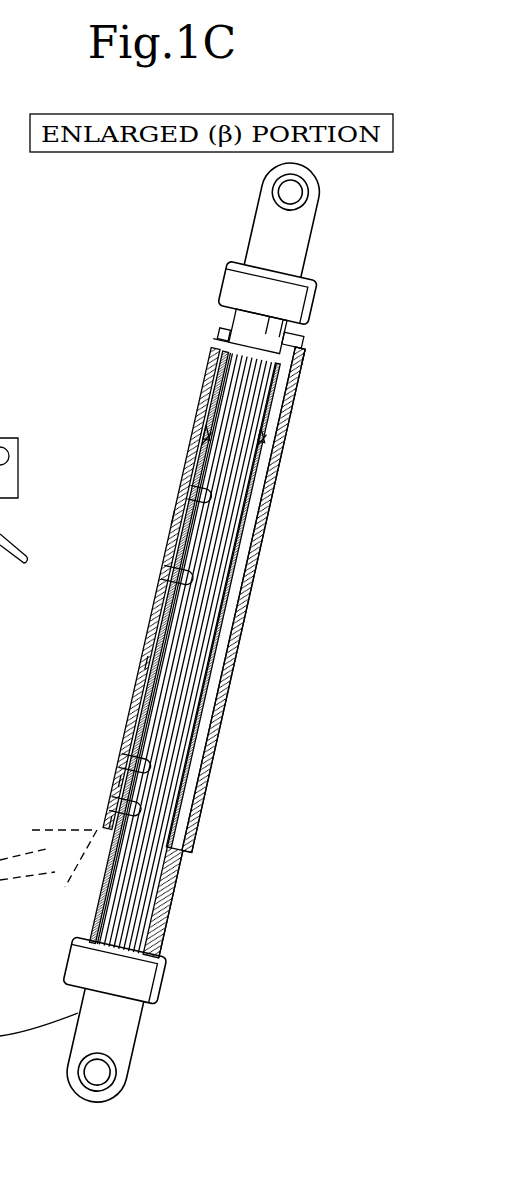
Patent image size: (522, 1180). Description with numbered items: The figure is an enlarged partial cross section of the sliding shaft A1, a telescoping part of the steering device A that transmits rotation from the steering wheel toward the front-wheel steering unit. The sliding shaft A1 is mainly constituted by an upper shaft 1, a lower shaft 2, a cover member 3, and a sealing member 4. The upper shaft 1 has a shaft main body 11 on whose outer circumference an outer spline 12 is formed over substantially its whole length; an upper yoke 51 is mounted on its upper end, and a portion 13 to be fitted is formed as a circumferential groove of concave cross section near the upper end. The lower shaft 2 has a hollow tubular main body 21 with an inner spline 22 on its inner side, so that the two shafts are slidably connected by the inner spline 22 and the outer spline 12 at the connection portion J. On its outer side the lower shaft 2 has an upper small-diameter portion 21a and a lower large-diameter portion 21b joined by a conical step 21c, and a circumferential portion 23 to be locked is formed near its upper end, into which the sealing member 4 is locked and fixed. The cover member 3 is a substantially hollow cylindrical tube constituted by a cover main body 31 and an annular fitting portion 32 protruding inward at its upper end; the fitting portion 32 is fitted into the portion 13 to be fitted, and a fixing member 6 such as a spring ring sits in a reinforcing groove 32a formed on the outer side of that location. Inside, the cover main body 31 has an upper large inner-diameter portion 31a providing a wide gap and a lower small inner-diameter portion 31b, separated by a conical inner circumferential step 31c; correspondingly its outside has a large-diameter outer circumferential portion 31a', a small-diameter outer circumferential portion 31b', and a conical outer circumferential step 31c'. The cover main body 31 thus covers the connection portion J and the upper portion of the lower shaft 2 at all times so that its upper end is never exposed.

The upper yoke 51 is at (248, 244).
The portion to be fitted 13 is at (252, 337).
The shaft main body 11 is at (289, 329).
The fixing member 6 is at (298, 362).
The fitting portion 32 is at (236, 322).
The reinforcing groove 32a is at (224, 335).
The upper shaft 1 is at (225, 373).
The outer spline 12 is at (235, 392).
The sealing member 4 is at (190, 432).
The portion to be locked 23 is at (268, 438).
The inner spline 22 is at (192, 487).
The sliding shaft A1 is at (165, 527).
The large inner-diameter portion 31a is at (134, 552).
The cover member 3 is at (161, 583).
The cover main body 31 is at (148, 642).
The large-diameter outer circumferential portion 31a' is at (112, 658).
The tubular main body 21 is at (167, 907).
The small-diameter portion 21a is at (247, 550).
The step 21c is at (228, 660).
The large-diameter portion 21b is at (186, 862).
The connection portion J is at (208, 727).
The inner circumferential step 31c is at (121, 740).
The outer circumferential step 31c' is at (86, 757).
The small inner-diameter portion 31b is at (109, 792).
The small-diameter outer circumferential portion 31b' is at (71, 807).
The lower shaft 2 is at (88, 922).
The steering device A is at (0, 611).